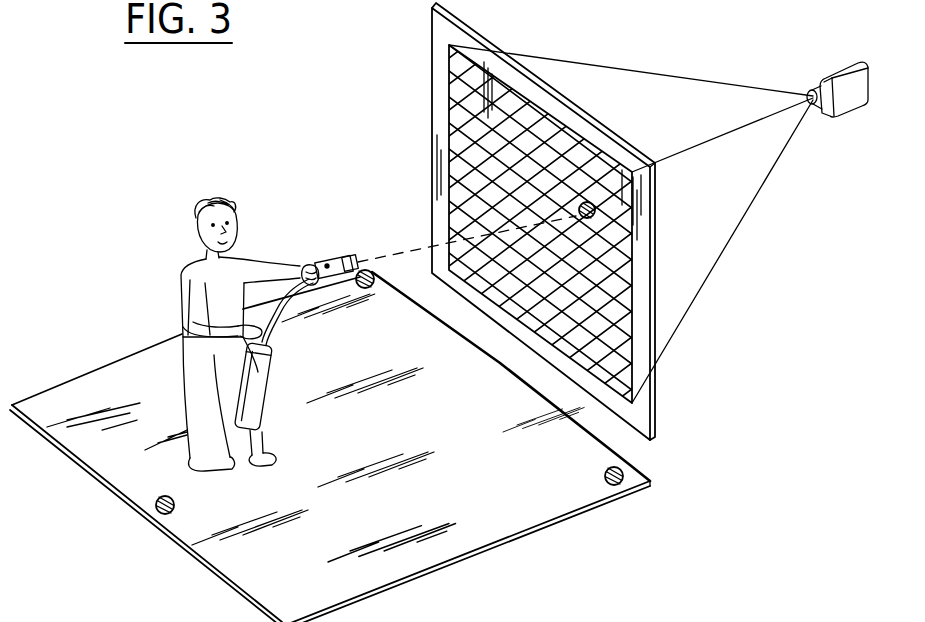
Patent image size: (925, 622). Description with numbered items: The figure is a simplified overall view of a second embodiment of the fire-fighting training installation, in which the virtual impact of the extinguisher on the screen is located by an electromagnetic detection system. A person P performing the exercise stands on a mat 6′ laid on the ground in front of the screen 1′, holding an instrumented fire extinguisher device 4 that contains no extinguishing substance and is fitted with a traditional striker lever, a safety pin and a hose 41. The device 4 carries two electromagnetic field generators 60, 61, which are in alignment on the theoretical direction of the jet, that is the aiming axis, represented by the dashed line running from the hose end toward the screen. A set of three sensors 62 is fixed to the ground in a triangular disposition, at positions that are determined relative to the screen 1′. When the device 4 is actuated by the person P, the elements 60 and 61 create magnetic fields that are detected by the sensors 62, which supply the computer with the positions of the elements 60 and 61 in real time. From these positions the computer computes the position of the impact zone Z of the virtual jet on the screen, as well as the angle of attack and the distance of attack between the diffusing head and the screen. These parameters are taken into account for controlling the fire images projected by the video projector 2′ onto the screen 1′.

The screen 1′ is at (598, 96).
The video projector 2′ is at (851, 105).
The impact zone Z is at (596, 211).
The person P is at (142, 279).
The fire extinguisher device 4 is at (268, 376).
The hose 41 is at (315, 285).
The electromagnetic field generator 60 is at (322, 265).
The electromagnetic field generator 61 is at (343, 258).
The sensors 62 is at (373, 270).
The mat 6′ is at (470, 530).